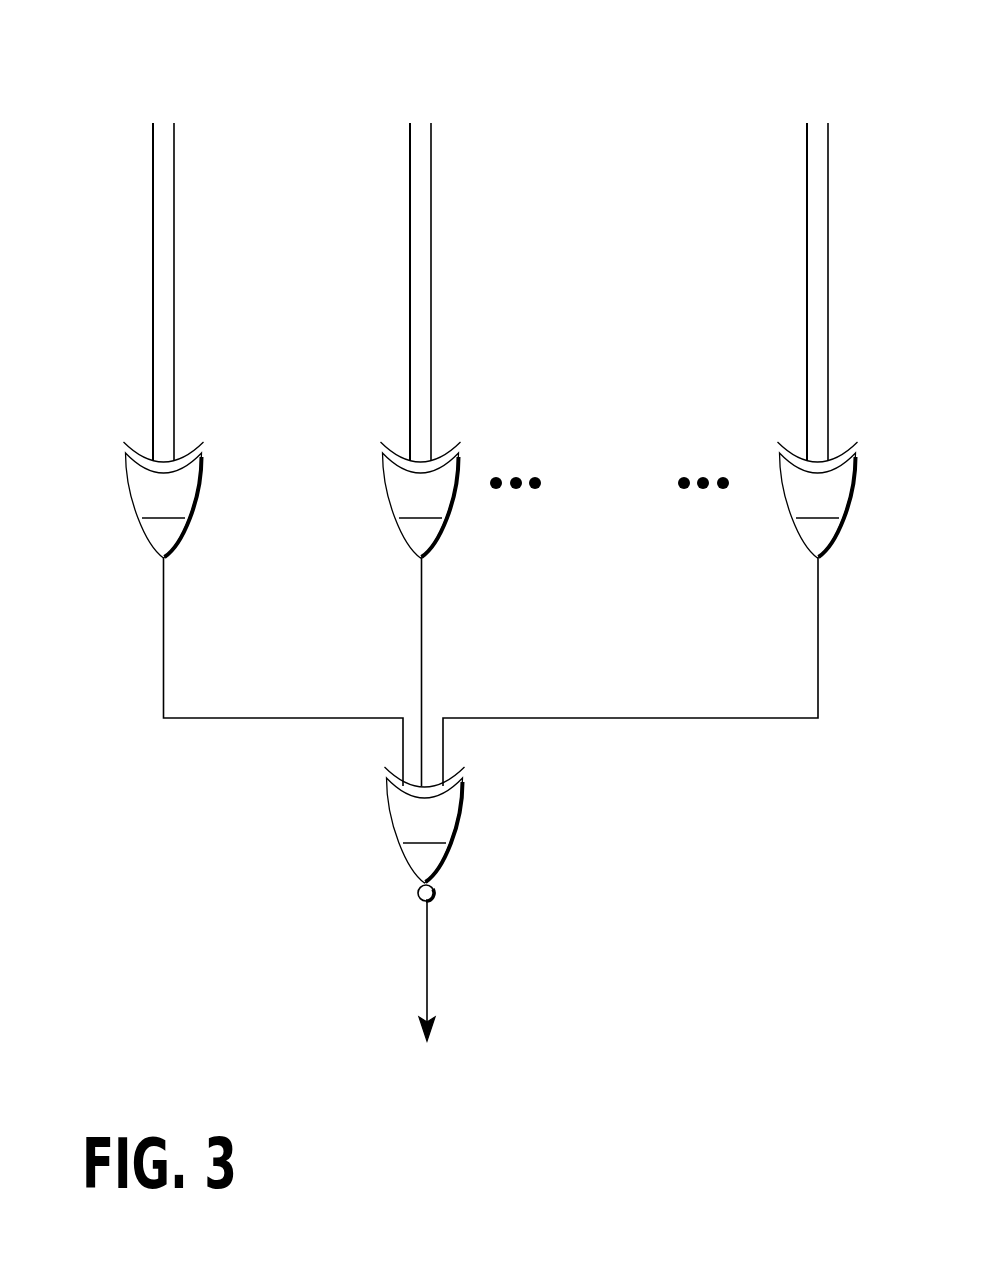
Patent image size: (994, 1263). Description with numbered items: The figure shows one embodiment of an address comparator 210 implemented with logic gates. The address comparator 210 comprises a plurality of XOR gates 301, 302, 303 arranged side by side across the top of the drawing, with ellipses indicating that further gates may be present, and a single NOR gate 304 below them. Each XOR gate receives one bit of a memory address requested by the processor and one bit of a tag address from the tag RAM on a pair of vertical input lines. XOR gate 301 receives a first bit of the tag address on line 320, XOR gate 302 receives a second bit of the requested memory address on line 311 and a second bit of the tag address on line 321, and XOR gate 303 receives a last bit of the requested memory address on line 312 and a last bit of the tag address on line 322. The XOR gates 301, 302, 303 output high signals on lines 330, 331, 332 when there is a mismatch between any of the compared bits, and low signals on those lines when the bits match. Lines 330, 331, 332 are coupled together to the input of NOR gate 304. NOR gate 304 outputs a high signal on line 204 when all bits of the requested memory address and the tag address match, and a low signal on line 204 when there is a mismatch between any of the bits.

The address comparator 210 is at (561, 87).
The XOR gate 301 is at (153, 228).
The line 311 is at (410, 228).
The line 312 is at (807, 228).
The line 320 is at (174, 373).
The line 321 is at (431, 373).
The line 322 is at (828, 373).
The XOR gate 302 is at (421, 500).
The XOR gate 303 is at (818, 500).
The NOR gate 304 is at (425, 834).
The line 330 is at (164, 658).
The line 331 is at (422, 658).
The line 332 is at (818, 658).
The line 204 is at (427, 991).